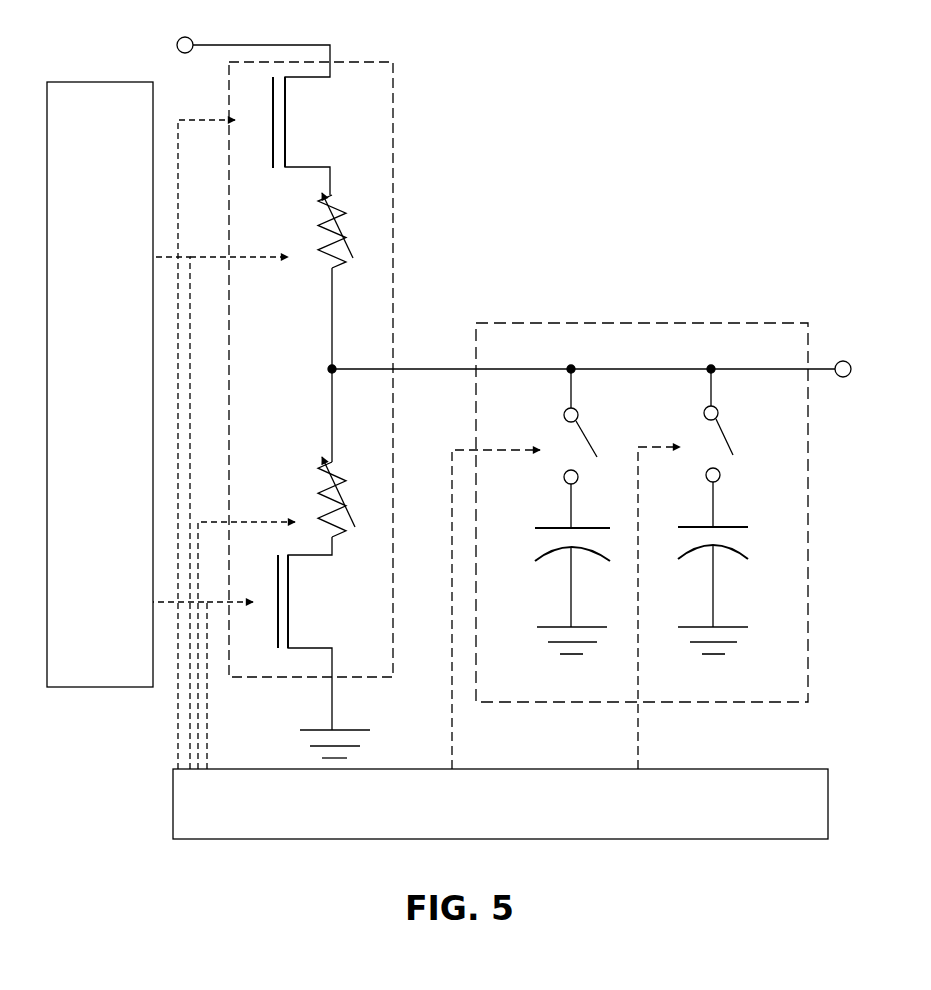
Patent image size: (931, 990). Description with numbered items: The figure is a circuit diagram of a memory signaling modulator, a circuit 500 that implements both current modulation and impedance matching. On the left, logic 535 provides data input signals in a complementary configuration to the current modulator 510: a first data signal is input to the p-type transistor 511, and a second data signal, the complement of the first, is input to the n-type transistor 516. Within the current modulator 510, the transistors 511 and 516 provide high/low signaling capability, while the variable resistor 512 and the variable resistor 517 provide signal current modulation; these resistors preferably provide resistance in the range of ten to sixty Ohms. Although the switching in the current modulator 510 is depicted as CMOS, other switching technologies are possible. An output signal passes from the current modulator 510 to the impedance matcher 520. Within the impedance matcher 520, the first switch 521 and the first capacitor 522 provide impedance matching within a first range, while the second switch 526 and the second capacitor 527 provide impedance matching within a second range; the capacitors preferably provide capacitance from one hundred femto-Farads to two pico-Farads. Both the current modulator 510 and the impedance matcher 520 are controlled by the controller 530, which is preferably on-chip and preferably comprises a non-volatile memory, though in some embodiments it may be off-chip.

The circuit 500 is at (646, 203).
The current modulator 510 is at (295, 378).
The p-type transistor 511 is at (313, 137).
The variable resistor 512 is at (300, 241).
The n-type transistor 516 is at (320, 607).
The variable resistor 517 is at (300, 510).
The impedance matcher 520 is at (531, 686).
The first switch 521 is at (598, 442).
The first capacitor 522 is at (590, 520).
The second switch 526 is at (735, 443).
The second capacitor 527 is at (732, 520).
The controller 530 is at (765, 811).
The logic 535 is at (118, 421).